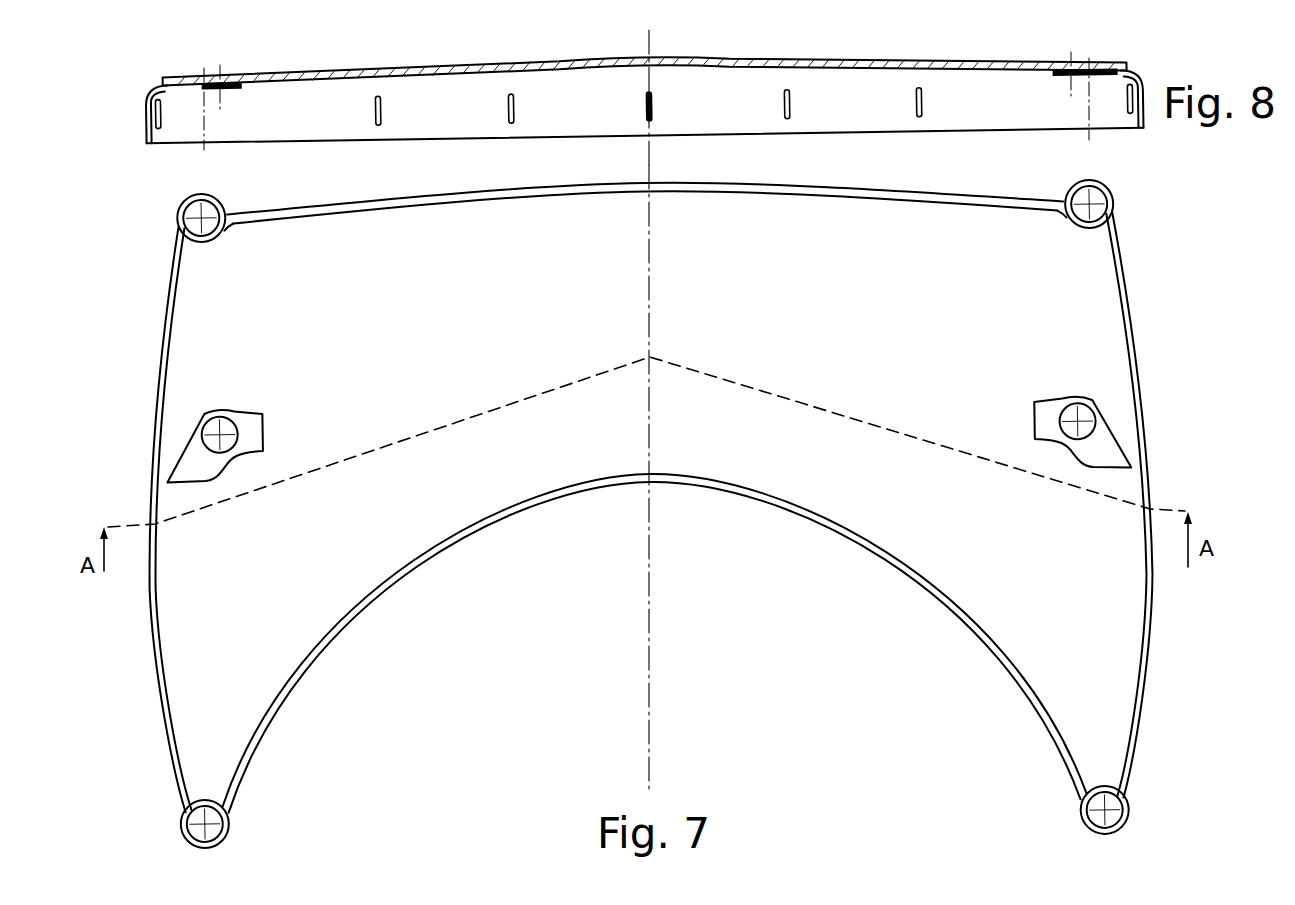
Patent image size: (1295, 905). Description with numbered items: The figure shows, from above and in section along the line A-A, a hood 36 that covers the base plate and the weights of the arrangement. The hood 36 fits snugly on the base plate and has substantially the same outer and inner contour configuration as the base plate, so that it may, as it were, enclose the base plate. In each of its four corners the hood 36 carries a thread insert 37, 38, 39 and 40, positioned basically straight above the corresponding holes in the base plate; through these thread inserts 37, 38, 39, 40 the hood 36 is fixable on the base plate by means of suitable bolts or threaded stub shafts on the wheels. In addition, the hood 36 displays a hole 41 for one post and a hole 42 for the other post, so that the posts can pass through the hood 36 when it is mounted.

In FIG. 7, the hood 36 is at (318, 573).
In FIG. 7, the thread insert 37 is at (218, 798).
In FIG. 7, the thread insert 38 is at (193, 226).
In FIG. 7, the thread insert 39 is at (1097, 217).
In FIG. 7, the thread insert 40 is at (1107, 785).
In FIG. 7, the hole 41 is at (223, 412).
In FIG. 8, the hole 41 is at (230, 77).
In FIG. 7, the hole 42 is at (1078, 403).
In FIG. 8, the hole 42 is at (1060, 63).